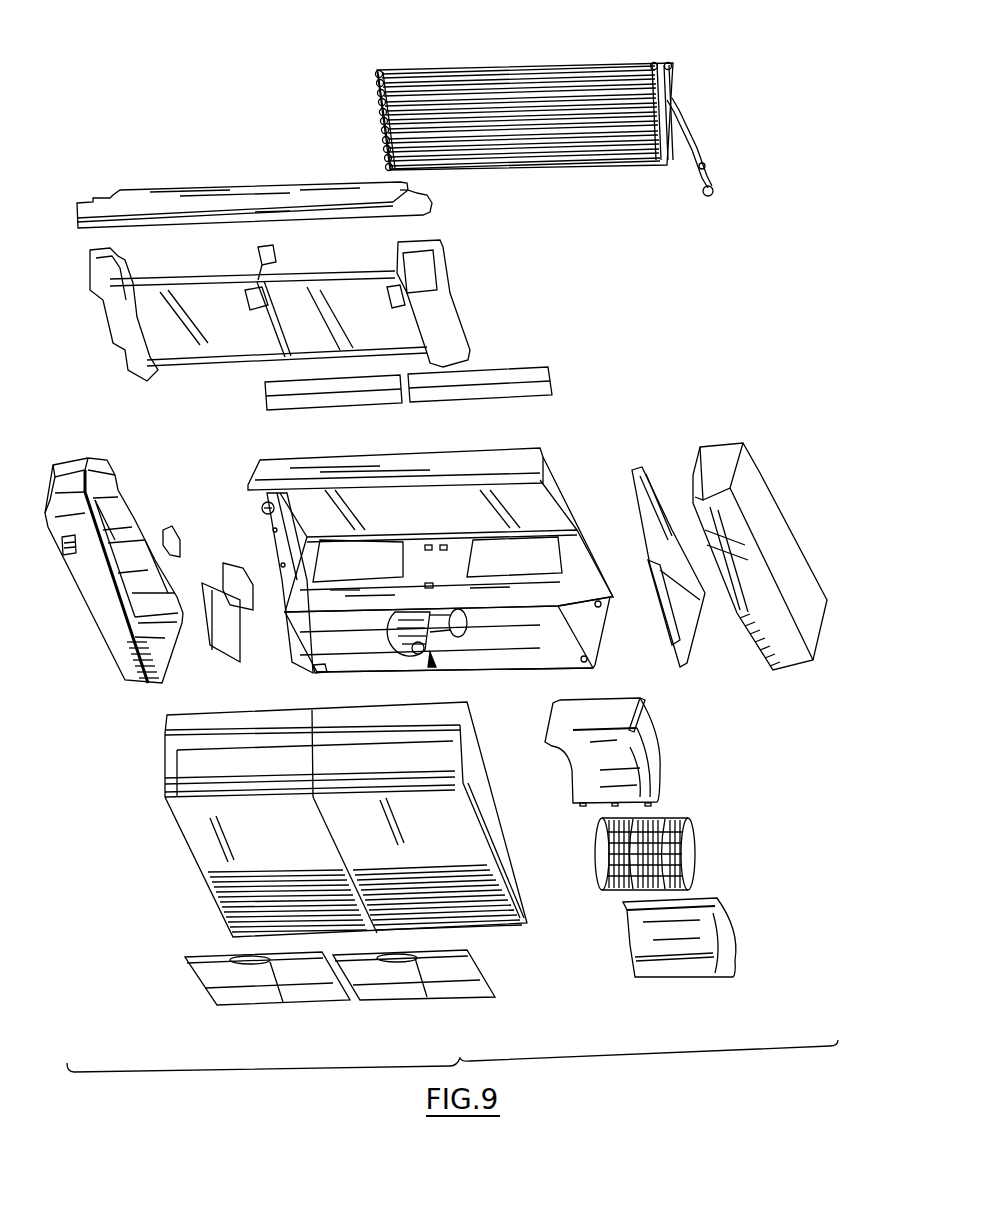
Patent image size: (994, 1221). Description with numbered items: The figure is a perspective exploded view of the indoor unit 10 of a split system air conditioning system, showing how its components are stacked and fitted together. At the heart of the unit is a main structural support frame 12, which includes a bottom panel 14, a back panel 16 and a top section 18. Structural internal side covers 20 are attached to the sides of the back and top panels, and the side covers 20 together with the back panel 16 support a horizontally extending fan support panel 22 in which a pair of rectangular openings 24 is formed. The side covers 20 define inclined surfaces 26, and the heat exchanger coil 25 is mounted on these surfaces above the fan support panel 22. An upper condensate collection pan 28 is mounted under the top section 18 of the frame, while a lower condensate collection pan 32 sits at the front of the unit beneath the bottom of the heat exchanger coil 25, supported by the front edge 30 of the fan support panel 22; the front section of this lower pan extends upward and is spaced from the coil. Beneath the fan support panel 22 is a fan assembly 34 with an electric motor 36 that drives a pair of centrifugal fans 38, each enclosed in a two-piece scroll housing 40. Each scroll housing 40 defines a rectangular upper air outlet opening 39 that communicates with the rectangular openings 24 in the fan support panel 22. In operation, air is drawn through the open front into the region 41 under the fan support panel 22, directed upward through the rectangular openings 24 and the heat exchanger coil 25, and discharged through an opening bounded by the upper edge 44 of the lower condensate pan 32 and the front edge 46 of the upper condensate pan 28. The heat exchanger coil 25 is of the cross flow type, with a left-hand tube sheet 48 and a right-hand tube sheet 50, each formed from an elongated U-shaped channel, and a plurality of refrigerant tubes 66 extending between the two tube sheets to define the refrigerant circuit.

The indoor unit 10 is at (110, 994).
The main structural support frame 12 is at (571, 448).
The bottom panel 14 is at (603, 625).
The back panel 16 is at (565, 495).
The top section 18 is at (418, 462).
The internal side covers 20 is at (285, 660).
The fan support panel 22 is at (515, 615).
The rectangular openings 24 is at (325, 570).
The heat exchanger coil 25 is at (517, 110).
The inclined surfaces 26 is at (270, 545).
The upper condensate collection pan 28 is at (275, 182).
The front edge 30 is at (340, 675).
The lower condensate collection pan 32 is at (321, 325).
The fan assembly 34 is at (438, 662).
The electric motor 36 is at (466, 633).
The centrifugal fans 38 is at (400, 658).
The upper air outlet opening 39 is at (644, 710).
The scroll housing 40 is at (663, 829).
The region 41 is at (591, 621).
The upper edge 44 is at (172, 278).
The front edge 46 is at (340, 222).
The left-hand tube sheet 48 is at (374, 62).
The right-hand tube sheet 50 is at (665, 49).
The refrigerant tubes 66 is at (548, 70).